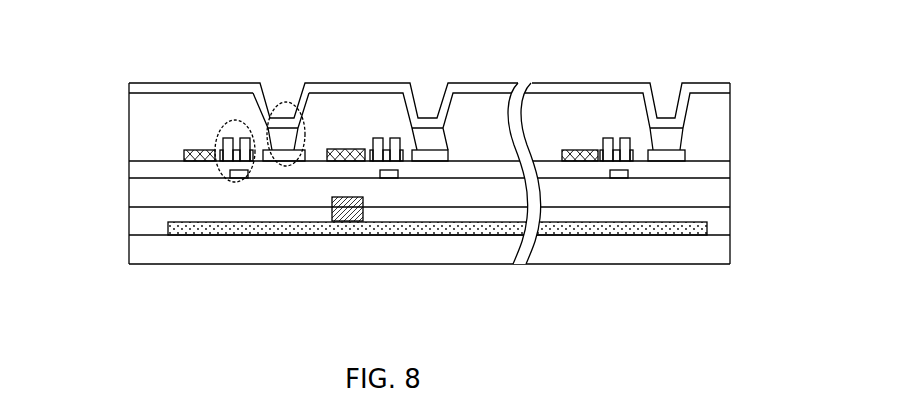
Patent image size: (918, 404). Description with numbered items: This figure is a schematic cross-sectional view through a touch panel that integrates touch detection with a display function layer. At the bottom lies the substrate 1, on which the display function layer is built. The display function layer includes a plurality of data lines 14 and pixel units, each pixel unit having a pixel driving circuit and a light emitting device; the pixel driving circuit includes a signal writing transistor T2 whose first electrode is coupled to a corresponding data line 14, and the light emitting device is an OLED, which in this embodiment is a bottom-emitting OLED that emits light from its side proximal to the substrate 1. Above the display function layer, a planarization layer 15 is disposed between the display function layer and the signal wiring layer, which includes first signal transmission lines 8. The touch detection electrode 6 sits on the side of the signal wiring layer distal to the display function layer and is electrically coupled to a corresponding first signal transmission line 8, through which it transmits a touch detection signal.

The substrate 1 is at (135, 250).
The touch detection electrode 6 is at (157, 226).
The first signal transmission line 8 is at (364, 222).
The data line 14 is at (174, 144).
The planarization layer 15 is at (122, 187).
The signal writing transistor T2 is at (238, 110).
The organic light emitting diode OLED is at (290, 87).